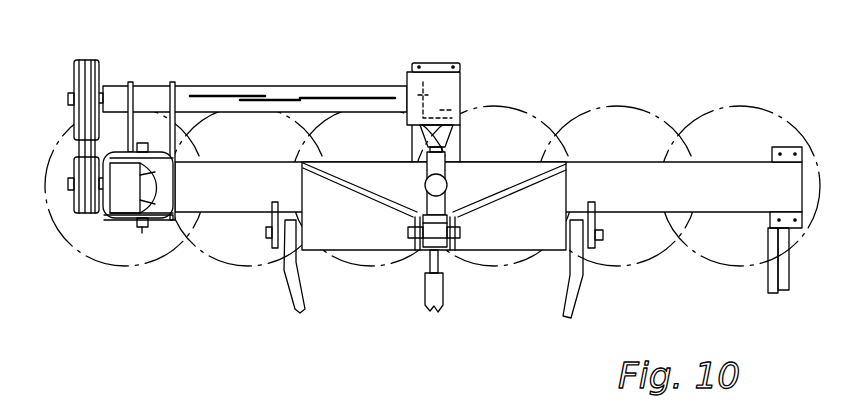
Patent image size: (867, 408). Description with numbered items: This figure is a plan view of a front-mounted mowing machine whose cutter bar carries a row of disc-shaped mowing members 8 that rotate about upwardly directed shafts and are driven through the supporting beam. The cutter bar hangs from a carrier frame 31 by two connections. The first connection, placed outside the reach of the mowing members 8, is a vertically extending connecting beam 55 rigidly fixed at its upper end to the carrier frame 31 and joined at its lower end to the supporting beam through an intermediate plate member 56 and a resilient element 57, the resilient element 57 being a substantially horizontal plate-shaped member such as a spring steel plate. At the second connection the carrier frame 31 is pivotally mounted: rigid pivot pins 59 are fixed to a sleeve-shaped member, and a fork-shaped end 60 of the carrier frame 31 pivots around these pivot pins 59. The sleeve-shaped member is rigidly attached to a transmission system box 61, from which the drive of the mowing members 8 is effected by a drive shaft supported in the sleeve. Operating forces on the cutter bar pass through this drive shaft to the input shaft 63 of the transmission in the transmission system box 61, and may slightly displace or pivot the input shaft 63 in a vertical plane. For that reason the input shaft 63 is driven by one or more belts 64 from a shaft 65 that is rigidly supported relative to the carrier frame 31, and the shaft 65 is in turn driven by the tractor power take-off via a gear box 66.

The mowing member 8 is at (238, 267).
The carrier frame 31 is at (630, 177).
The connecting beam 55 is at (773, 242).
The intermediate plate member 56 is at (778, 292).
The resilient element 57 is at (770, 268).
The pivot pins 59 is at (145, 143).
The fork-shaped end 60 is at (167, 221).
The transmission system box 61 is at (133, 187).
The input shaft 63 is at (73, 192).
The belts 64 is at (82, 60).
The shaft 65 is at (103, 88).
The gear box 66 is at (461, 92).